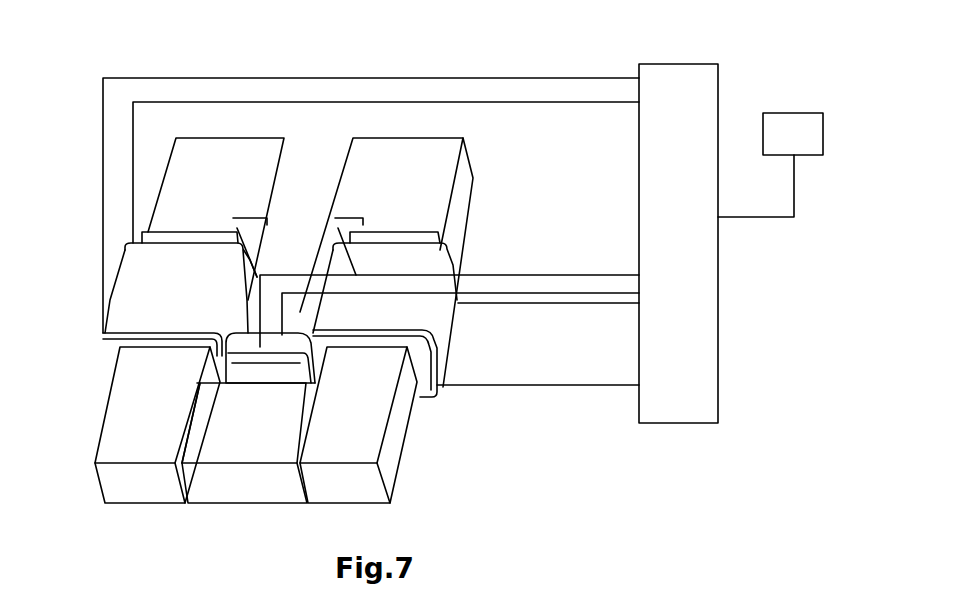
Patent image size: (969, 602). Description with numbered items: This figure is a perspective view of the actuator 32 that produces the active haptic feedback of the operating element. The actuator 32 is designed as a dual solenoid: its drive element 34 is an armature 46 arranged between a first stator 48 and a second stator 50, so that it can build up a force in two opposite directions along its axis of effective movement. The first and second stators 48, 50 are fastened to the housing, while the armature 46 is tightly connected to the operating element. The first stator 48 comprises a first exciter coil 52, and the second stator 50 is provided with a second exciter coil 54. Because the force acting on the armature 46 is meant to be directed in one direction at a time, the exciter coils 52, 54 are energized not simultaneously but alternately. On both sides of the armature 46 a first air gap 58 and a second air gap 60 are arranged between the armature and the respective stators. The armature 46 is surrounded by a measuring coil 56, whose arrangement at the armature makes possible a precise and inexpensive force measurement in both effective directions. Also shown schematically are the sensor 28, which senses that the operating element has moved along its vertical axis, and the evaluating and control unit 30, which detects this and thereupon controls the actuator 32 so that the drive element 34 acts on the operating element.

The sensor 28 is at (797, 128).
The evaluating and control unit 30 is at (675, 185).
The actuator 32 is at (502, 133).
The drive element 34 is at (267, 427).
The armature 46 is at (191, 423).
The first stator 48 is at (128, 430).
The second stator 50 is at (365, 442).
The first exciter coil 52 is at (132, 295).
The second exciter coil 54 is at (400, 312).
The measuring coil 56 is at (277, 343).
The first air gap 58 is at (284, 138).
The second air gap 60 is at (353, 140).